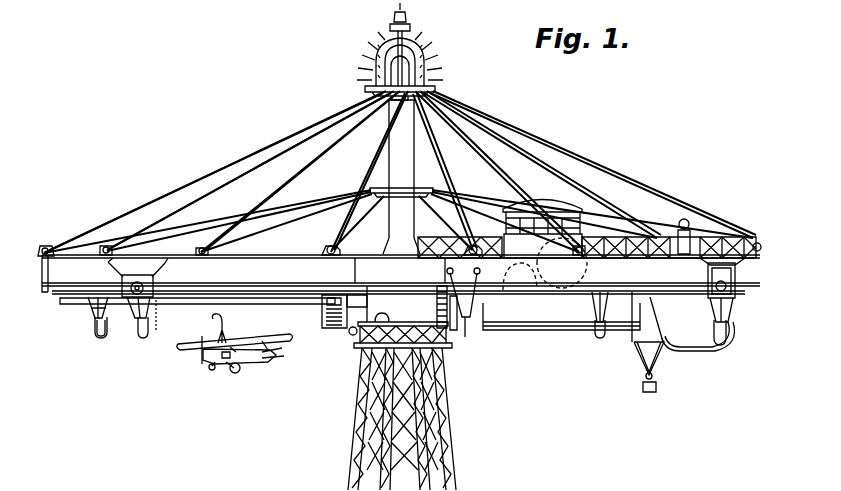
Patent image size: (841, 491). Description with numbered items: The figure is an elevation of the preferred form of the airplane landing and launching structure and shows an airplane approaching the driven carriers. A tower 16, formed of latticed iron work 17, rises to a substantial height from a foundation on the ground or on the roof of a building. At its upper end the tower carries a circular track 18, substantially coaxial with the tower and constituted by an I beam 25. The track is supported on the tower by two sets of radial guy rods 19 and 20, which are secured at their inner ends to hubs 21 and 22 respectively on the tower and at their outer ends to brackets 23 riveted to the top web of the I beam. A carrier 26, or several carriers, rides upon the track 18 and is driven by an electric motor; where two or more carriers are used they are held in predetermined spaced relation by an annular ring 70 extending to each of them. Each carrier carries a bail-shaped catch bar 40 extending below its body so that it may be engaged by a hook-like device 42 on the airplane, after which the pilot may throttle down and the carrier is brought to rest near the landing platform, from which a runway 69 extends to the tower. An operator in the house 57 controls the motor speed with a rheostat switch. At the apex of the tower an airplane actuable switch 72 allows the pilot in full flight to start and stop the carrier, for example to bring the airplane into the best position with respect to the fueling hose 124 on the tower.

The tower 16 is at (476, 438).
The latticed iron work 17 is at (456, 418).
The circular track 18 is at (754, 268).
The radial guy rods 19 is at (242, 157).
The radial guy rods 20 is at (301, 211).
The hub 21 is at (440, 88).
The hub 22 is at (414, 189).
The brackets 23 is at (320, 255).
The I beam 25 is at (86, 270).
The carrier 26 is at (88, 329).
The catch bar 40 is at (101, 340).
The hook-like device 42 is at (226, 319).
The house 57 is at (546, 187).
The runway 69 is at (478, 237).
The annular ring 70 is at (62, 290).
The airplane actuable switch 72 is at (422, 25).
The fueling hose 124 is at (708, 355).